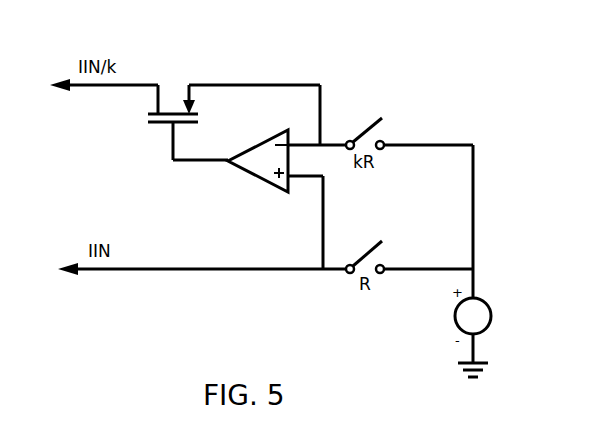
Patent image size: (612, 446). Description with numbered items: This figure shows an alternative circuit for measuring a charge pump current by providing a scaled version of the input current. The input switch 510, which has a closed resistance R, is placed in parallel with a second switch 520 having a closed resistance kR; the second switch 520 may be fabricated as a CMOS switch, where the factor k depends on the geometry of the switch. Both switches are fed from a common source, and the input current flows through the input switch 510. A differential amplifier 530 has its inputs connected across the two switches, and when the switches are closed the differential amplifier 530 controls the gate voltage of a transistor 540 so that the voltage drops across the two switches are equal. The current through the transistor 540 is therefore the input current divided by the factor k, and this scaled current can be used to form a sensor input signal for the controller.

The input switch 510 is at (365, 237).
The second switch 520 is at (365, 113).
The differential amplifier 530 is at (258, 178).
The transistor 540 is at (180, 70).